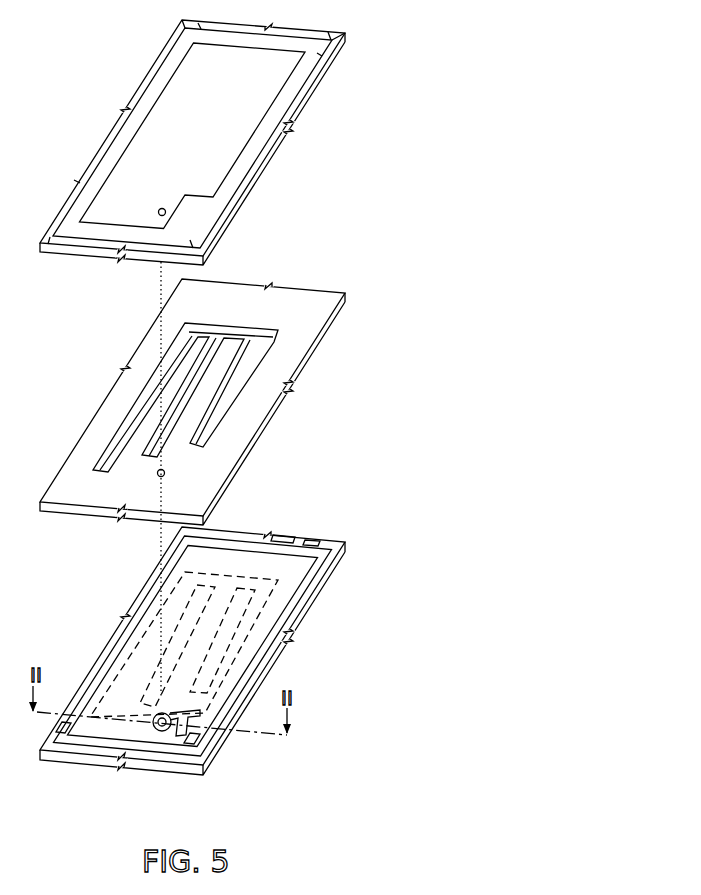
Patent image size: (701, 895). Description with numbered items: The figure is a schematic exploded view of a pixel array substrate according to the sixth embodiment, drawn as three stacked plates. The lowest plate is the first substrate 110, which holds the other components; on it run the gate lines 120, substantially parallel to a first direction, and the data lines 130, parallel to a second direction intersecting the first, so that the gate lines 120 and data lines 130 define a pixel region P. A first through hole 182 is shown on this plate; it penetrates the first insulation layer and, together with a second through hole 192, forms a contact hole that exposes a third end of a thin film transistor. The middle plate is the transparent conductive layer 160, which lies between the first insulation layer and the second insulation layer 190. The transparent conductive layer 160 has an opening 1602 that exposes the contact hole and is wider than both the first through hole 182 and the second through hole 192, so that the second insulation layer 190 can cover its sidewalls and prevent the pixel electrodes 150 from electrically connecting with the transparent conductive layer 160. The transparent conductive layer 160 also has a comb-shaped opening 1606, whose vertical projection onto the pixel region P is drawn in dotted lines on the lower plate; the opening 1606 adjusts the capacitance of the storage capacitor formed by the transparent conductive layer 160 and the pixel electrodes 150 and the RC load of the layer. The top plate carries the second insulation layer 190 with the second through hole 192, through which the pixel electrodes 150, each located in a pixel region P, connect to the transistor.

The first substrate 110 is at (310, 608).
The gate lines 120 is at (328, 553).
The data lines 130 is at (57, 757).
The pixel electrodes 150 is at (136, 166).
The transparent conductive layer 160 is at (265, 422).
The first through hole 182 is at (150, 736).
The second insulation layer 190 is at (300, 112).
The second through hole 192 is at (166, 211).
The opening 1602 is at (164, 473).
The opening 1606 is at (243, 377).
The pixel region P is at (130, 705).